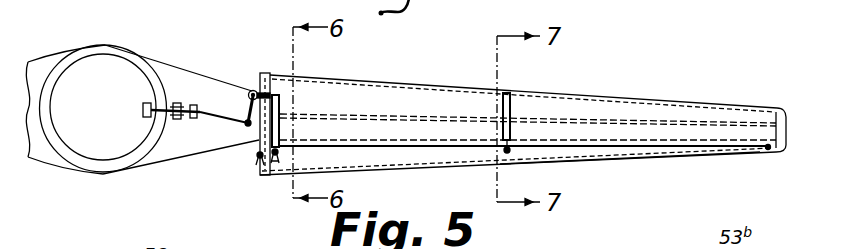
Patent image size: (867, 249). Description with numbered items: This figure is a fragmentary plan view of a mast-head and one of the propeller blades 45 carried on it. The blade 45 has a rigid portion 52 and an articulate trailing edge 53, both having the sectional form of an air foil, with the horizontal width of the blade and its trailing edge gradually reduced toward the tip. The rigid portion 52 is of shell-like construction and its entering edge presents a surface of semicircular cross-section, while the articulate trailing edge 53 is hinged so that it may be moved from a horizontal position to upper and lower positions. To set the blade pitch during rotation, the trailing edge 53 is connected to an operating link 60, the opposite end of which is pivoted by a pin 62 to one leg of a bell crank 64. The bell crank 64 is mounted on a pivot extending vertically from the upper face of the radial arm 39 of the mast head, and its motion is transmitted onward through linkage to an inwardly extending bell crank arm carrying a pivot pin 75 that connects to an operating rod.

The radial arm 39 is at (183, 78).
The pivot pin 75 is at (145, 100).
The bell crank 64 is at (269, 74).
The propeller blade 45 is at (430, 100).
The pin 62 is at (279, 98).
The operating link 60 is at (279, 134).
The rigid portion 52 is at (563, 103).
The articulate trailing edge 53 is at (610, 150).